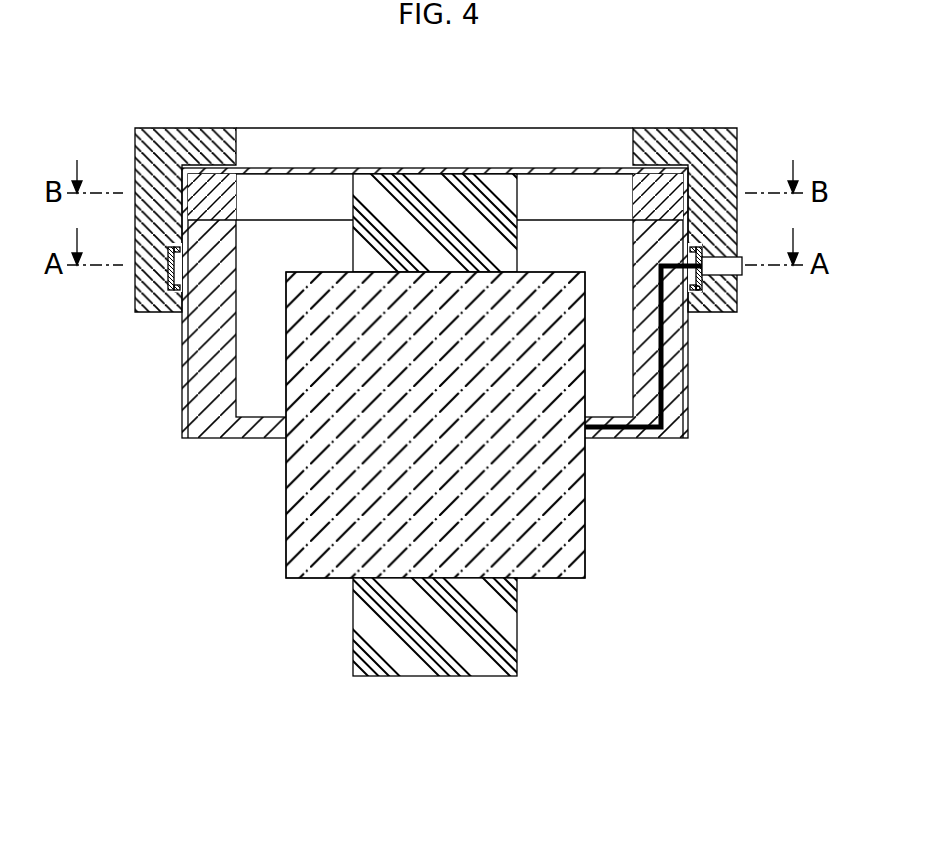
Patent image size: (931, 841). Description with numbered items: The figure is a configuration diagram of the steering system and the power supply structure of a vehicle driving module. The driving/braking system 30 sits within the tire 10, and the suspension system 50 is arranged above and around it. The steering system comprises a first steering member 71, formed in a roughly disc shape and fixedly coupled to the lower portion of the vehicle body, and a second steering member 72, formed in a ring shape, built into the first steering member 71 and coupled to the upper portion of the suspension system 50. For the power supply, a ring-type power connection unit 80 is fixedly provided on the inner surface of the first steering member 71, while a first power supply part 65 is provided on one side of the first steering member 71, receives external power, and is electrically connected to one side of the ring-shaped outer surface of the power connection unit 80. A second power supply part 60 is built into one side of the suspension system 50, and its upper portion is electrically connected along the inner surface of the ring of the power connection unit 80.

The tire 10 is at (405, 655).
The driving/braking system 30 is at (585, 528).
The suspension system 50 is at (197, 400).
The second power supply part 60 is at (665, 385).
The first power supply part 65 is at (742, 270).
The first steering member 71 is at (161, 158).
The second steering member 72 is at (223, 191).
The power connection unit 80 is at (168, 285).